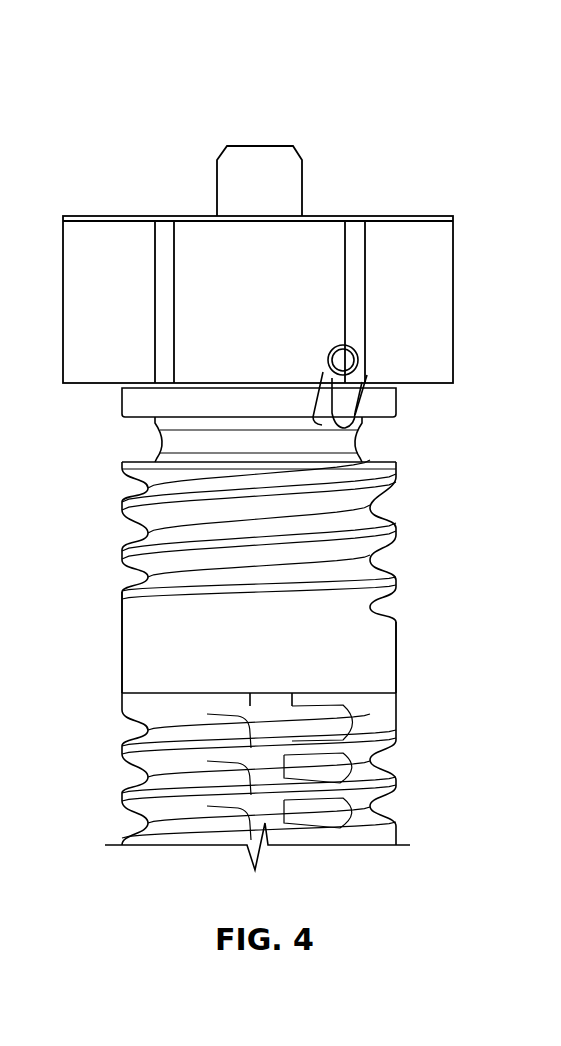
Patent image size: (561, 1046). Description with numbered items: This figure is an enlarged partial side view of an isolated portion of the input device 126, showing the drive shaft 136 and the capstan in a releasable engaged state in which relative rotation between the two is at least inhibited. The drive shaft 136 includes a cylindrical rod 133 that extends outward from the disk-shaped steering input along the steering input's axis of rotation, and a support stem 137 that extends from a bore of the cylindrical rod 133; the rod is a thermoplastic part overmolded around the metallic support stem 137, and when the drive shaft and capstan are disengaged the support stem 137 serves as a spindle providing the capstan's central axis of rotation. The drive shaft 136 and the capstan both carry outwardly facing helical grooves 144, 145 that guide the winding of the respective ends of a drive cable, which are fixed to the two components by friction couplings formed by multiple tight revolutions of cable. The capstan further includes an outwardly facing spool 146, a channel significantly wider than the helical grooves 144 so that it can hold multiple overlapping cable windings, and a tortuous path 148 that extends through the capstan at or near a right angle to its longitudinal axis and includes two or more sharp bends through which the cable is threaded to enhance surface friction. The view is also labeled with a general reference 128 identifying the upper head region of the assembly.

The input device 126 is at (443, 92).
The head 128 is at (415, 195).
The support stem 137 is at (268, 146).
The tortuous path 148 is at (345, 360).
The spool 146 is at (365, 445).
The helical groove 145 is at (378, 532).
The cylindrical rod 133 is at (397, 715).
The drive shaft 136 is at (433, 792).
The helical groove 144 is at (142, 826).